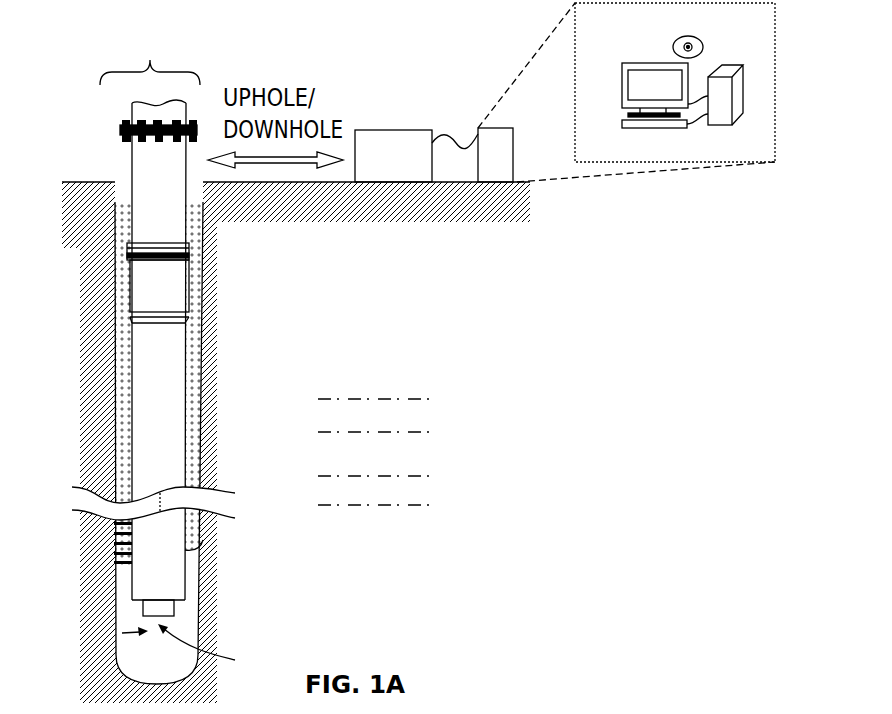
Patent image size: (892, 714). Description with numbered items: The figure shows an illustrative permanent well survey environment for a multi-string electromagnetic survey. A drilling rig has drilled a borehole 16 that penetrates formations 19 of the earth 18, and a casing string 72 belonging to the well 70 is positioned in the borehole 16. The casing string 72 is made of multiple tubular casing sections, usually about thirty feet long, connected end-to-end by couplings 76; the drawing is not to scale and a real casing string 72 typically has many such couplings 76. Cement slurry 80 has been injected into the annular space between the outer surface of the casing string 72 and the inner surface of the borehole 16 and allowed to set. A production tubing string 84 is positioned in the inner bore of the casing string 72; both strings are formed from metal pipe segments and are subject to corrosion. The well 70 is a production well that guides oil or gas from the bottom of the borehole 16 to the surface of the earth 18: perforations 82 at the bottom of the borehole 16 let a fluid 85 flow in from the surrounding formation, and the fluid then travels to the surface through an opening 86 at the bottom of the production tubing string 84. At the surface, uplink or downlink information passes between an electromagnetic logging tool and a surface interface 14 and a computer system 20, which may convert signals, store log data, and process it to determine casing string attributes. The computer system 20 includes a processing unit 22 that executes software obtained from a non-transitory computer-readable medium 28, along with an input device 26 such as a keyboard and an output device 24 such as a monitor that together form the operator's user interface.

The surface interface 14 is at (435, 162).
The borehole 16 is at (210, 248).
The earth 18 is at (74, 219).
The formations 19 is at (447, 387).
The computer system 20 is at (777, 85).
The processing unit 22 is at (733, 63).
The output device 24 is at (622, 85).
The input device 26 is at (673, 130).
The non-transitory computer-readable medium 28 is at (685, 37).
The well 70 is at (150, 315).
The casing string 72 is at (132, 163).
The couplings 76 is at (178, 298).
The cement slurry 80 is at (197, 442).
The perforations 82 is at (77, 525).
The production tubing string 84 is at (178, 608).
The fluid 85 is at (133, 636).
The opening 86 is at (210, 651).